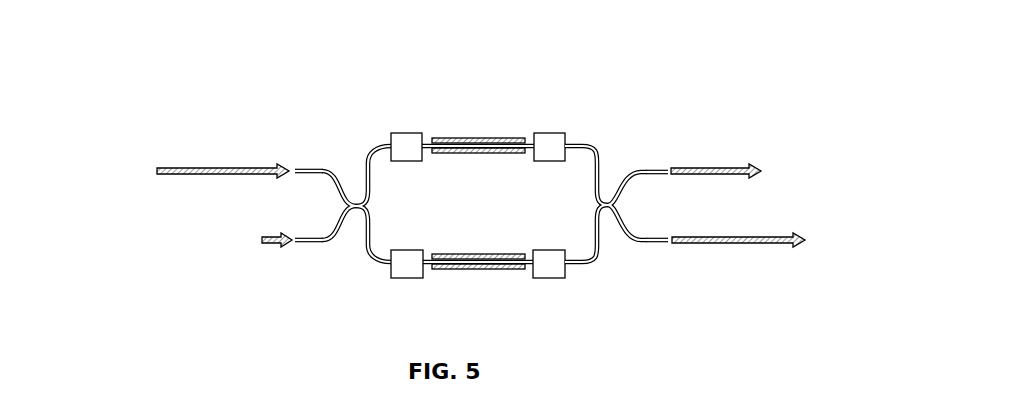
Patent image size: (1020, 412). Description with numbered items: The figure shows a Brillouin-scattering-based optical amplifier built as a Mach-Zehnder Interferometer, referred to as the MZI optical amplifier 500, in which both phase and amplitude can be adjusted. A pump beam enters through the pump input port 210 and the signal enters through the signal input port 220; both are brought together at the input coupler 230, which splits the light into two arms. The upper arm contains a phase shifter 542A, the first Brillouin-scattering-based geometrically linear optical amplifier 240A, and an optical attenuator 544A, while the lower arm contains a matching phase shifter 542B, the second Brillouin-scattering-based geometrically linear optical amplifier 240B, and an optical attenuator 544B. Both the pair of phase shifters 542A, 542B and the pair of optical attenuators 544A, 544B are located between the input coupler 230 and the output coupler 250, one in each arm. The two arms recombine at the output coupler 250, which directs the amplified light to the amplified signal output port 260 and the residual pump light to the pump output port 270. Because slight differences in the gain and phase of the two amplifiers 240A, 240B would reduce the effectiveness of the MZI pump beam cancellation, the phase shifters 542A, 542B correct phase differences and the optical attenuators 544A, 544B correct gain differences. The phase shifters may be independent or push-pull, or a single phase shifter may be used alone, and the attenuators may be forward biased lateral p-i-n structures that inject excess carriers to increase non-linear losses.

The MZI optical amplifier 500 is at (468, 44).
The pump input port 210 is at (290, 161).
The signal input port 220 is at (289, 250).
The input coupler 230 is at (353, 185).
The phase shifter 542A is at (405, 130).
The first Brillouin-scattering-based geometrically linear optical amplifier 240A is at (479, 129).
The optical attenuator 544A is at (552, 129).
The phase shifter 542B is at (408, 283).
The second Brillouin-scattering-based geometrically linear optical amplifier 240B is at (479, 274).
The optical attenuator 544B is at (551, 283).
The output coupler 250 is at (611, 186).
The amplified signal output port 260 is at (676, 160).
The pump output port 270 is at (677, 249).